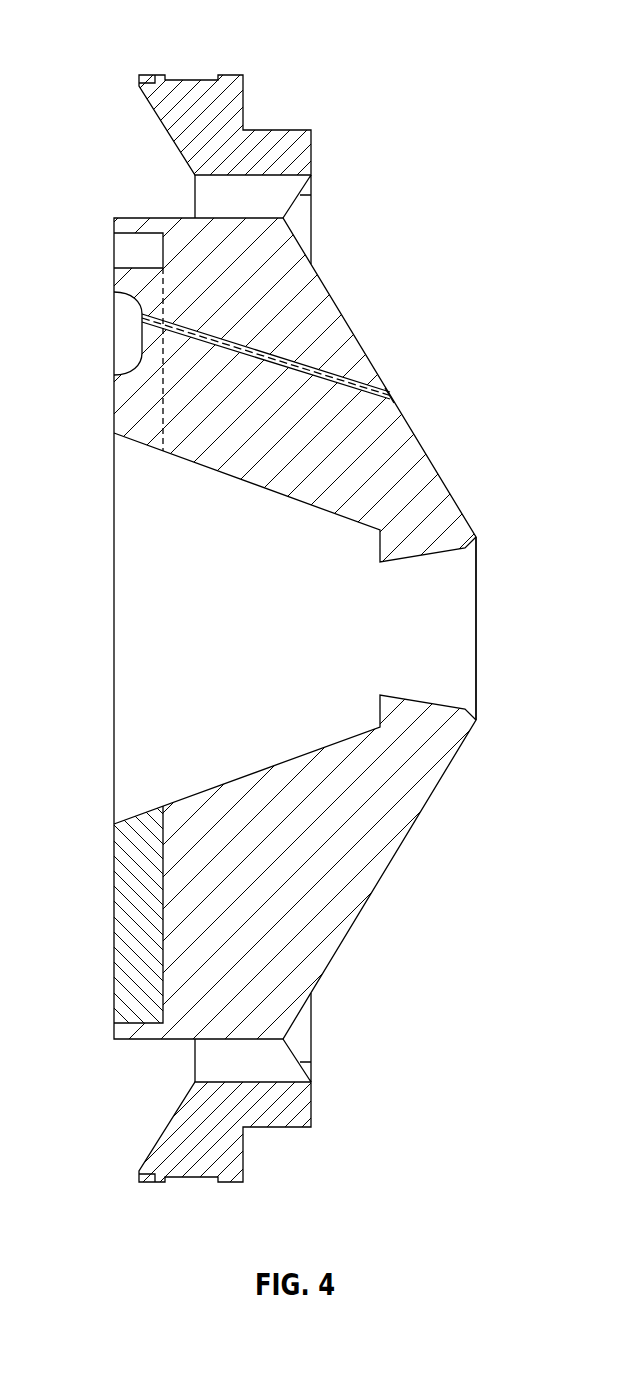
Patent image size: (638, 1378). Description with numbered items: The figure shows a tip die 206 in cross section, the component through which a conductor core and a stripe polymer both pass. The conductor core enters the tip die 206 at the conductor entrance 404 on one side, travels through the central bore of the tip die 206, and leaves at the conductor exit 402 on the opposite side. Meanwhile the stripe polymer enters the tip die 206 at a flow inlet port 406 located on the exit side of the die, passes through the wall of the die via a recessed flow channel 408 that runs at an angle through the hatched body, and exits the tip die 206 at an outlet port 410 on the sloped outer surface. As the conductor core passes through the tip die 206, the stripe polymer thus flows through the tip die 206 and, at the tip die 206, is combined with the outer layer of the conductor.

The tip die 206 is at (459, 60).
The conductor exit 402 is at (113, 630).
The conductor entrance 404 is at (477, 628).
The flow inlet port 406 is at (127, 327).
The recessed flow channel 408 is at (355, 381).
The outlet port 410 is at (390, 397).